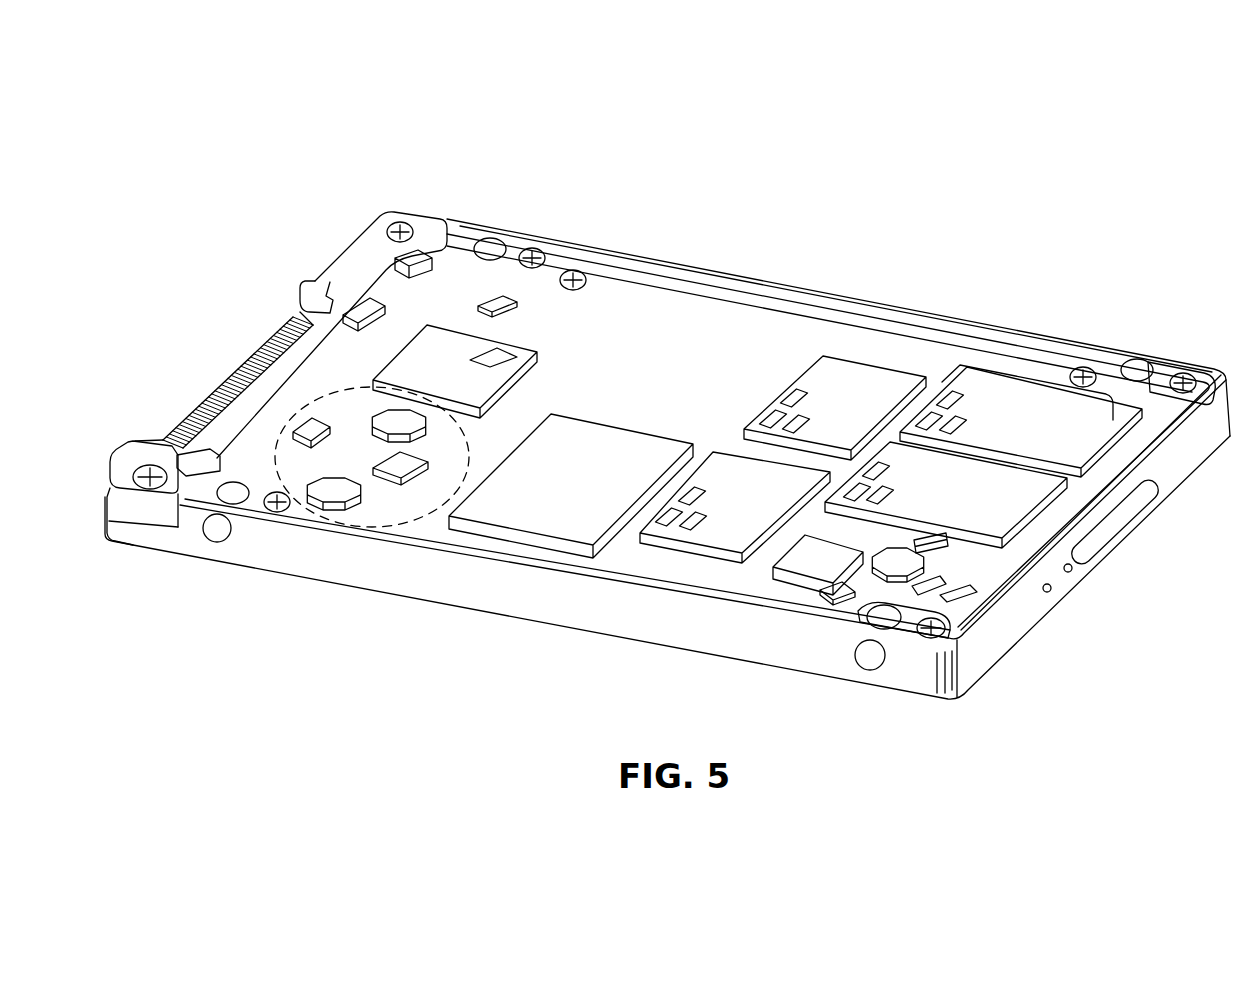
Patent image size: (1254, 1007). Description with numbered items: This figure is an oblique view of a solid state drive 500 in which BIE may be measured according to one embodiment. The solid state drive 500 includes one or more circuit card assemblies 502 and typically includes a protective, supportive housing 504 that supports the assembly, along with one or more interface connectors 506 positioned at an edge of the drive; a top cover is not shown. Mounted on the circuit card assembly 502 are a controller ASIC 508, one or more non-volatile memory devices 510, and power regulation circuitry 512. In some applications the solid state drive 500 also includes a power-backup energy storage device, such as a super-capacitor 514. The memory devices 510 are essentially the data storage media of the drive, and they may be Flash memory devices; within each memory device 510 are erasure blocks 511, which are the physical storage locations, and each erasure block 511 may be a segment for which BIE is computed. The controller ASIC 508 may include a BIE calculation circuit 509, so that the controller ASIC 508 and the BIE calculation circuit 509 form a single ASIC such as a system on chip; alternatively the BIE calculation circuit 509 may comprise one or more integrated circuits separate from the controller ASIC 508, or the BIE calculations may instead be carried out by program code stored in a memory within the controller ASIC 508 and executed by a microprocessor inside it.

The solid state drive 500 is at (886, 233).
The circuit card assembly 502 is at (757, 317).
The housing 504 is at (417, 597).
The interface connector 506 is at (267, 340).
The controller ASIC 508 is at (437, 365).
The BIE calculation circuit 509 is at (493, 348).
The non-volatile memory device 510 is at (1043, 423).
The erasure block 511 is at (693, 493).
The power regulation circuitry 512 is at (340, 532).
The super-capacitor 514 is at (580, 488).